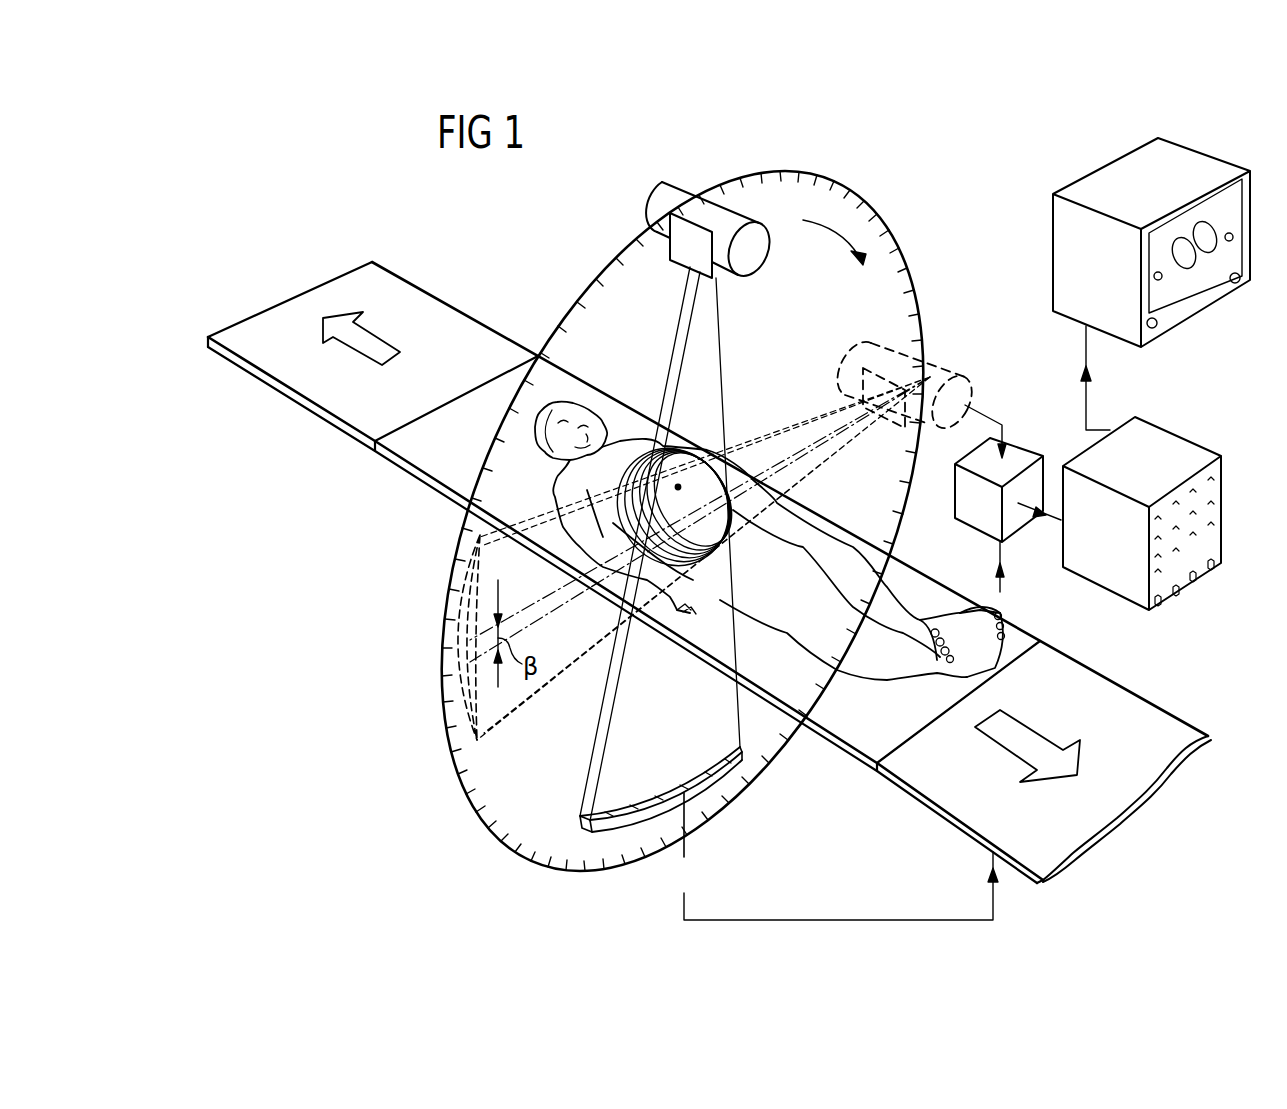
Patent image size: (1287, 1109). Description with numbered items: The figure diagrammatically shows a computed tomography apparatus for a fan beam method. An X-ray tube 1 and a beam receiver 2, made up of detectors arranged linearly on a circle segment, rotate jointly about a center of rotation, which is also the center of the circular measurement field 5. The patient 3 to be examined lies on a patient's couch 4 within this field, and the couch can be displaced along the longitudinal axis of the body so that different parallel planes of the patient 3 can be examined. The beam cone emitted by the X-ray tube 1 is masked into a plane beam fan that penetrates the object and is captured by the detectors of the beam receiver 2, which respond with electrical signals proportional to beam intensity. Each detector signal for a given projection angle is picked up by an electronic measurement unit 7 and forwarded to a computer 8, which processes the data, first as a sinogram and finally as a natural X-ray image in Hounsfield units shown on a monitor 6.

The X-ray tube 1 is at (743, 268).
The beam receiver 2 is at (615, 813).
The patient 3 is at (577, 403).
The patient's couch 4 is at (270, 320).
The circular measurement field 5 is at (877, 216).
The monitor 6 is at (1092, 184).
The electronic measurement unit 7 is at (1022, 456).
The computer 8 is at (1166, 440).